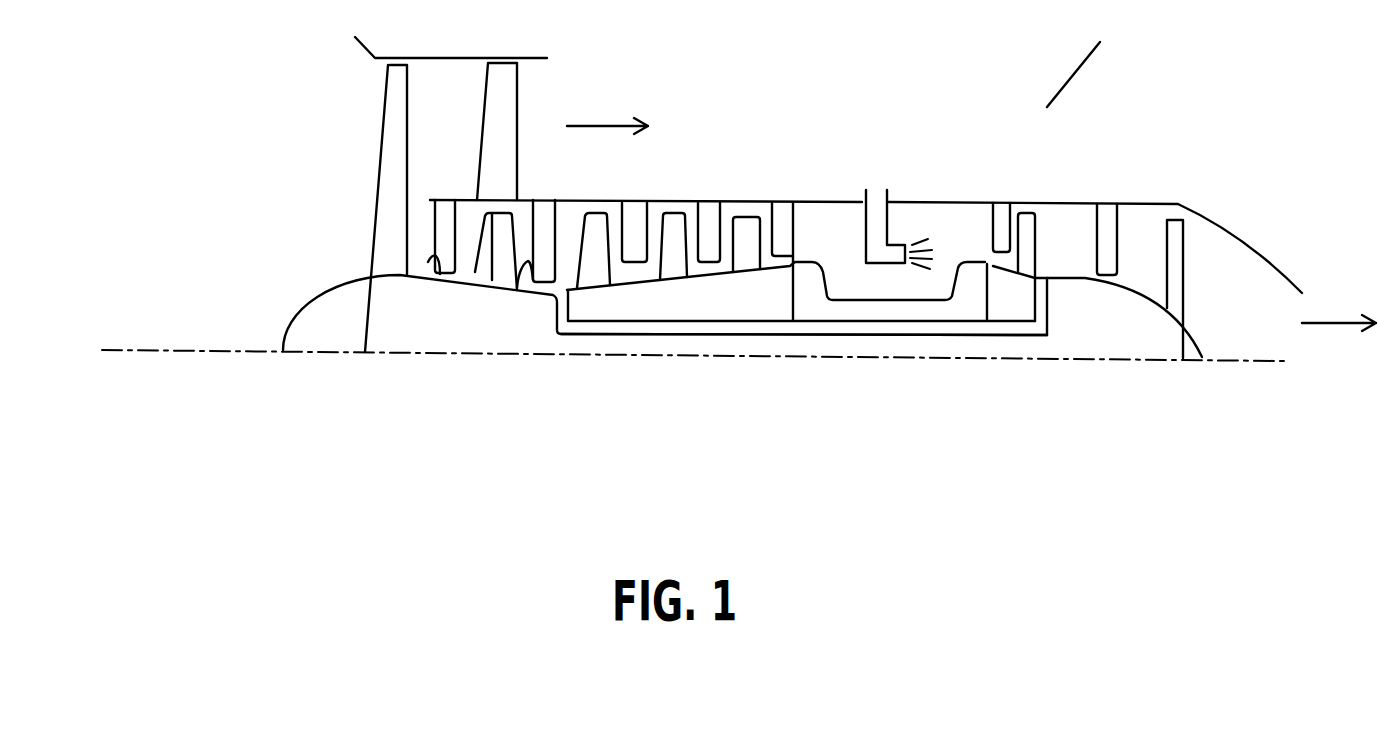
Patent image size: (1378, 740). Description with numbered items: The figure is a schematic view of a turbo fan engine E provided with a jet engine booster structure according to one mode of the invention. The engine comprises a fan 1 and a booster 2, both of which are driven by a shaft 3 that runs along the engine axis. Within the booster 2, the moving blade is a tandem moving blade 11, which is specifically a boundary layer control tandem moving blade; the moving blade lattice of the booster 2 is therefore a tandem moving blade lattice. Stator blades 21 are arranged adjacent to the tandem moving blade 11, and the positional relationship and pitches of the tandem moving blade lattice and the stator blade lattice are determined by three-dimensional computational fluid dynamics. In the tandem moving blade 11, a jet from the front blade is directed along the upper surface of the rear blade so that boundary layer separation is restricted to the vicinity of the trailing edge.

The fan 1 is at (372, 172).
The booster 2 is at (449, 185).
The tandem moving blade 11 is at (465, 200).
The stator blade 21 is at (428, 262).
The shaft 3 is at (727, 335).
The turbo fan engine E is at (1055, 97).